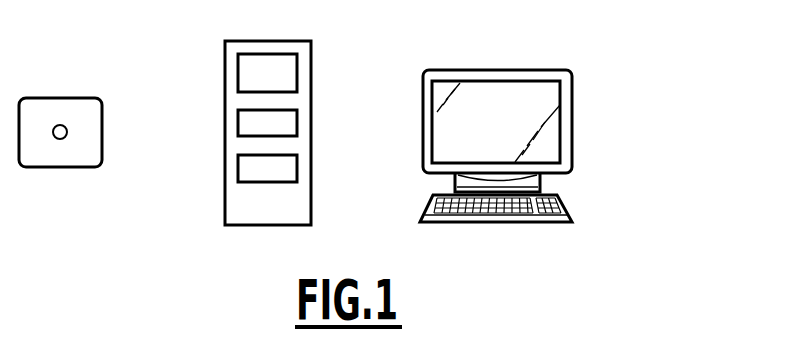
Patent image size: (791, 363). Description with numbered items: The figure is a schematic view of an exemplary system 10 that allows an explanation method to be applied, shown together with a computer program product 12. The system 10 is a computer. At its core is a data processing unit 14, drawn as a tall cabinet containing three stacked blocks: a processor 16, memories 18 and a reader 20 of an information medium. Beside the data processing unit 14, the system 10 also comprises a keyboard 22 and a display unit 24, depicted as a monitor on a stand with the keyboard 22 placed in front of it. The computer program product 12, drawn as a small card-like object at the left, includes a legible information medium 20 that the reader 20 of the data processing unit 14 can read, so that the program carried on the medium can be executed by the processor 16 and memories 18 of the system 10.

The system 10 is at (602, 79).
The computer program product 12 is at (102, 136).
The data processing unit 14 is at (289, 210).
The processor 16 is at (289, 170).
The memories 18 is at (287, 125).
The reader of an information medium 20 is at (289, 73).
The keyboard 22 is at (552, 207).
The display unit 24 is at (546, 143).